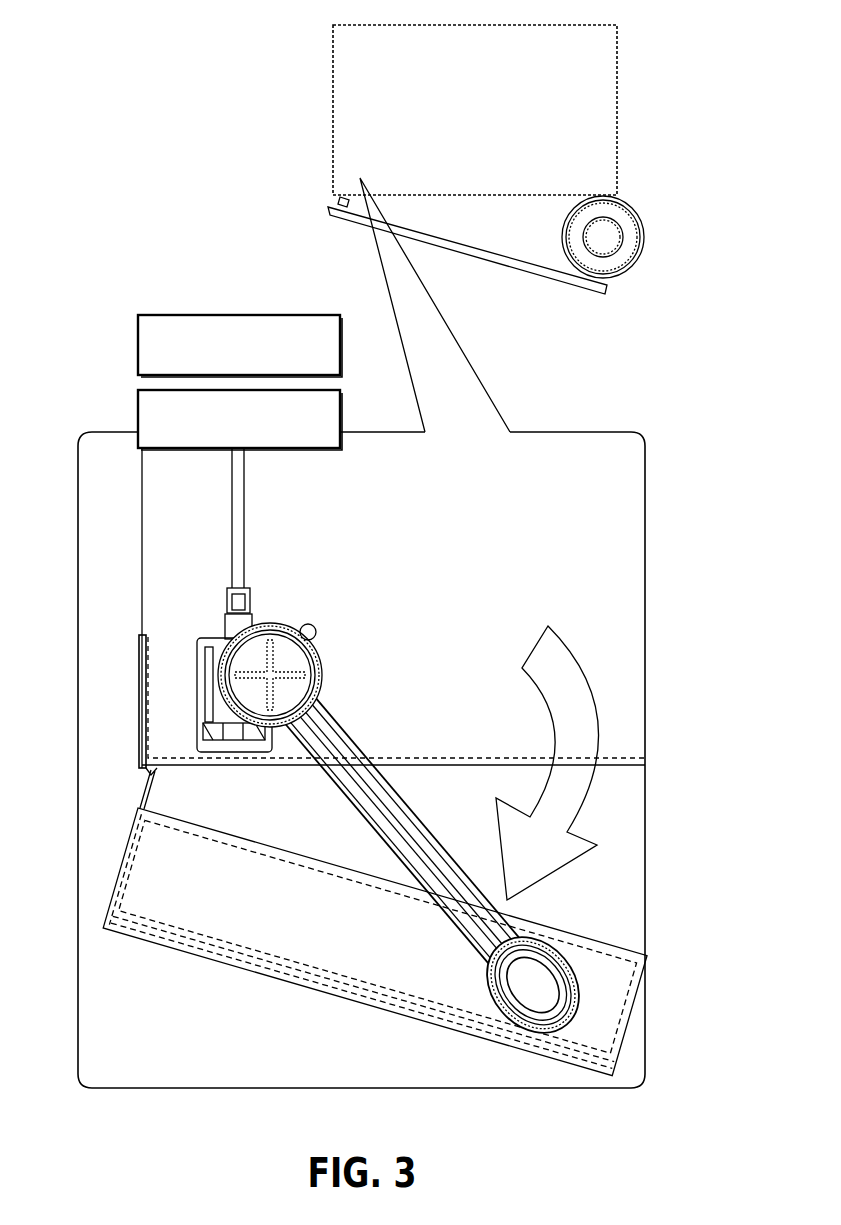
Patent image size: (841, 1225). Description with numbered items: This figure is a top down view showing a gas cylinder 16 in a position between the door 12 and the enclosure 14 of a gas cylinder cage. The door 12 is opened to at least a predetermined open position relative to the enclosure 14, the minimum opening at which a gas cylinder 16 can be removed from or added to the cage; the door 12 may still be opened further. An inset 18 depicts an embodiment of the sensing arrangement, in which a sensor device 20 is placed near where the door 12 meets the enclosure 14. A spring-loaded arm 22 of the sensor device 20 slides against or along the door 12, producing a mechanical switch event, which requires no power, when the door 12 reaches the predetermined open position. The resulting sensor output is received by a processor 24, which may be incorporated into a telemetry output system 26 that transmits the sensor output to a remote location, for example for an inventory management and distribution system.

The door 12 is at (347, 213).
The enclosure 14 is at (333, 90).
The gas cylinder 16 is at (643, 228).
The inset 18 is at (645, 846).
The sensor device 20 is at (367, 660).
The arm 22 is at (397, 860).
The processor 24 is at (138, 410).
The telemetry output system 26 is at (138, 345).